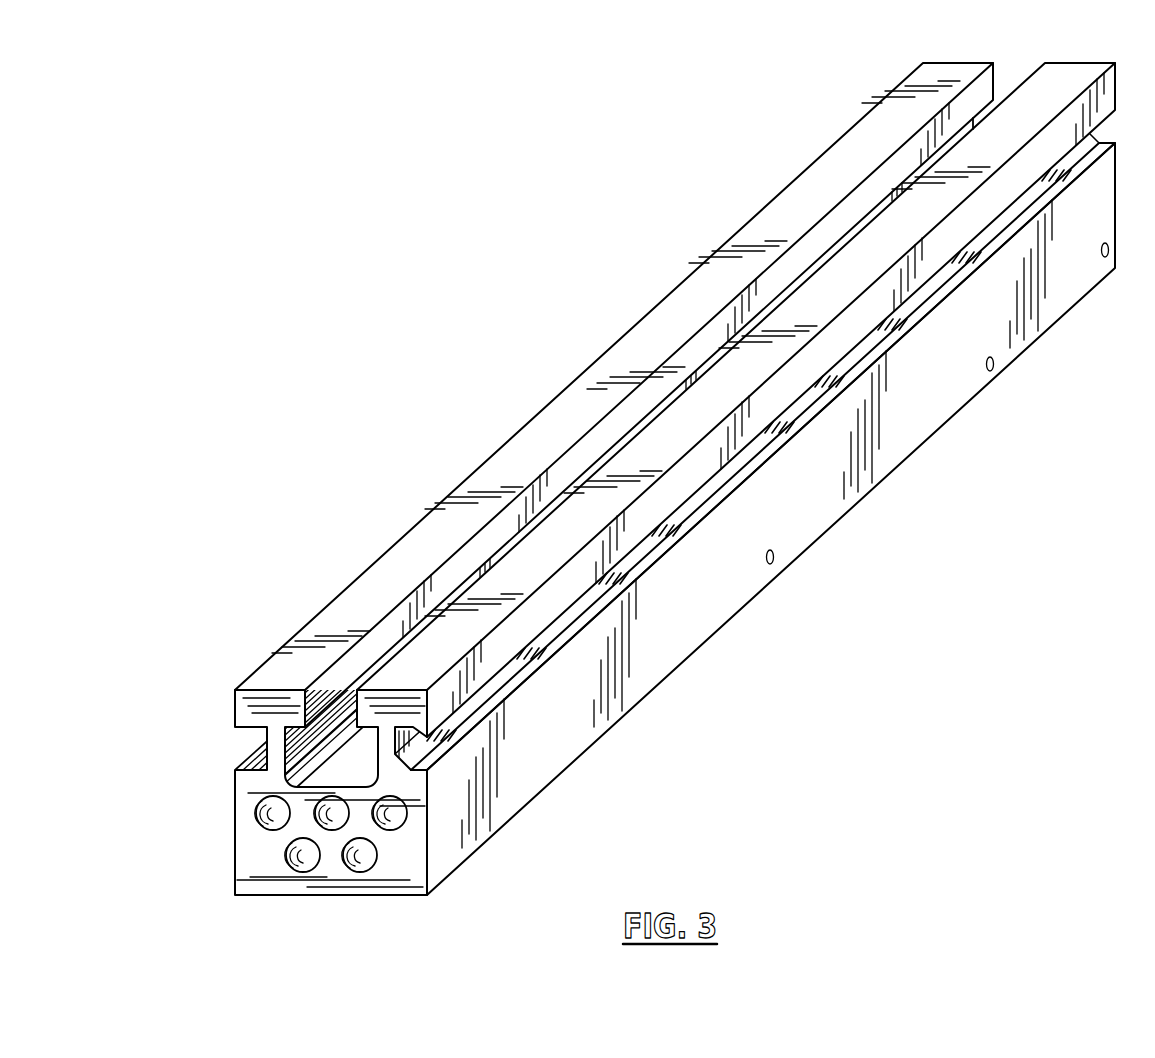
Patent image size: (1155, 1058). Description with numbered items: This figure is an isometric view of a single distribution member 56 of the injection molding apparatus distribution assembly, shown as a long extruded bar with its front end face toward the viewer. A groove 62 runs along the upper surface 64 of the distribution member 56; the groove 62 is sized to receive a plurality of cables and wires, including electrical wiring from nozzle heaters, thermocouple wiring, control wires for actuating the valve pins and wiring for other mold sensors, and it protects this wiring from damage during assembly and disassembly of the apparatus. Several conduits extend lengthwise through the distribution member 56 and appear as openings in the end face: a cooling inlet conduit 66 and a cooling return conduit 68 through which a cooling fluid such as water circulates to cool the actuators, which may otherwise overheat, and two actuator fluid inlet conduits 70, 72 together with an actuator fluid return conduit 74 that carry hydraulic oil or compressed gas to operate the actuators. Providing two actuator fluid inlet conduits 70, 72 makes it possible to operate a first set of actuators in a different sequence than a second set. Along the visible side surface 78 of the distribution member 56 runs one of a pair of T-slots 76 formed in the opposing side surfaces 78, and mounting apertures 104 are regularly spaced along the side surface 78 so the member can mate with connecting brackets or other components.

The distribution member 56 is at (832, 517).
The groove 62 is at (340, 696).
The upper surface 64 is at (547, 428).
The cooling inlet conduit 66 is at (290, 860).
The cooling return conduit 68 is at (375, 858).
The actuator fluid inlet conduit 70 is at (257, 823).
The actuator fluid inlet conduit 72 is at (403, 826).
The actuator fluid return conduit 74 is at (332, 826).
The T-slot 76 is at (510, 673).
The side surface 78 is at (711, 605).
The mounting aperture 104 is at (994, 367).